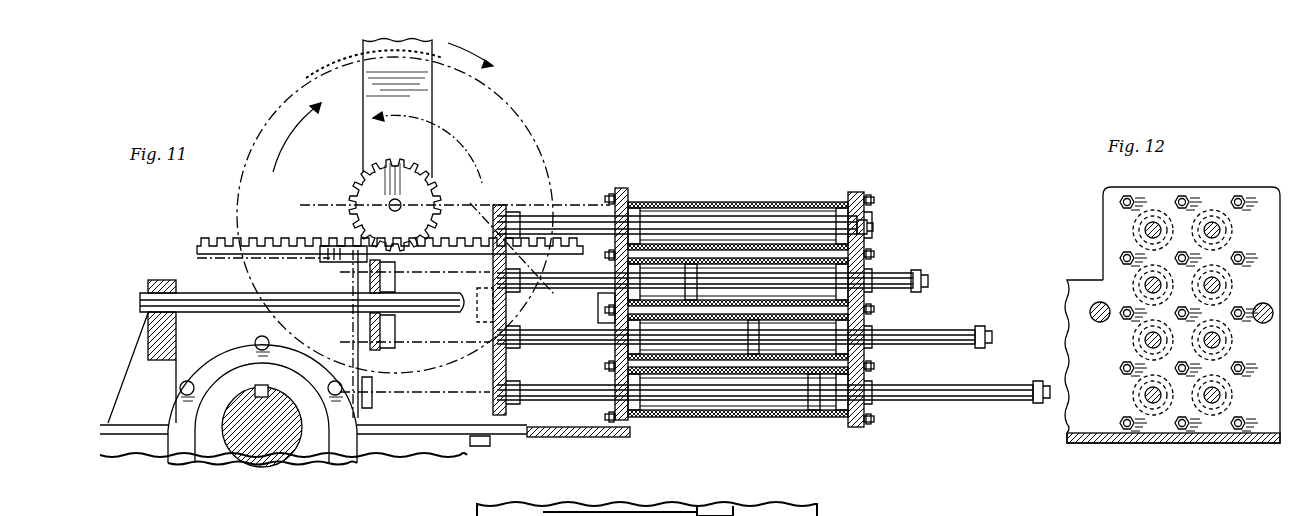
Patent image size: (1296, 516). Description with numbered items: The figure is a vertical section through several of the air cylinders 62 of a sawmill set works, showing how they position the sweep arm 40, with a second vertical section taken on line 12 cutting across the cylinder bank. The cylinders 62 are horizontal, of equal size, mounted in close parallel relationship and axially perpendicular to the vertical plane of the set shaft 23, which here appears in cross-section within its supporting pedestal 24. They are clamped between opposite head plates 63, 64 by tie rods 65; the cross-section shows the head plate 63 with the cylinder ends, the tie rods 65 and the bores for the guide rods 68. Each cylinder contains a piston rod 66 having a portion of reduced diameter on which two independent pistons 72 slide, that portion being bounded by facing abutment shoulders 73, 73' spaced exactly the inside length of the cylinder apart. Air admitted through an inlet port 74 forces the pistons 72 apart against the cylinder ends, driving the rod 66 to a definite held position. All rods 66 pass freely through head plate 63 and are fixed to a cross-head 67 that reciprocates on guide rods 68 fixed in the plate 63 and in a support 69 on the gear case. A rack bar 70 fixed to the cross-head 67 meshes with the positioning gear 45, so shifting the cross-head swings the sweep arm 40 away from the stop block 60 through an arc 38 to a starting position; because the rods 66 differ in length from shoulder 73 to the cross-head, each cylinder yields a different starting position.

In FIG. 11, the section line 12— 12 is at (560, 187).
In FIG. 11, the set shaft 23 is at (245, 440).
In FIG. 11, the pedestal bearing 24 is at (215, 445).
In FIG. 11, the circular path of arm 38 is at (528, 92).
In FIG. 11, the sweep arm 40 is at (363, 76).
In FIG. 11, the sweep arm positioning gear 45 is at (355, 182).
In FIG. 11, the stop block 60 is at (493, 357).
In FIG. 11, the air cylinders 62 is at (690, 203).
In FIG. 12, the air cylinders 62 is at (1135, 398).
In FIG. 11, the head plate 63 is at (615, 195).
In FIG. 12, the head plate 63 is at (1110, 197).
In FIG. 11, the head plate 64 is at (862, 192).
In FIG. 12, the tie rods 65 is at (1120, 258).
In FIG. 11, the piston rod 66 is at (768, 222).
In FIG. 12, the piston rod 66 is at (1150, 230).
In FIG. 11, the cross-head 67 is at (380, 335).
In FIG. 11, the guide rods 68 is at (222, 297).
In FIG. 12, the guide rods 68 is at (1092, 305).
In FIG. 11, the support 69 is at (160, 283).
In FIG. 11, the rack bar 70 is at (352, 240).
In FIG. 11, the pistons 72 is at (640, 212).
In FIG. 11, the abutment shoulder 73 is at (725, 323).
In FIG. 11, the abutment shoulder 73' is at (953, 325).
In FIG. 11, the air inlet port 74 is at (650, 215).